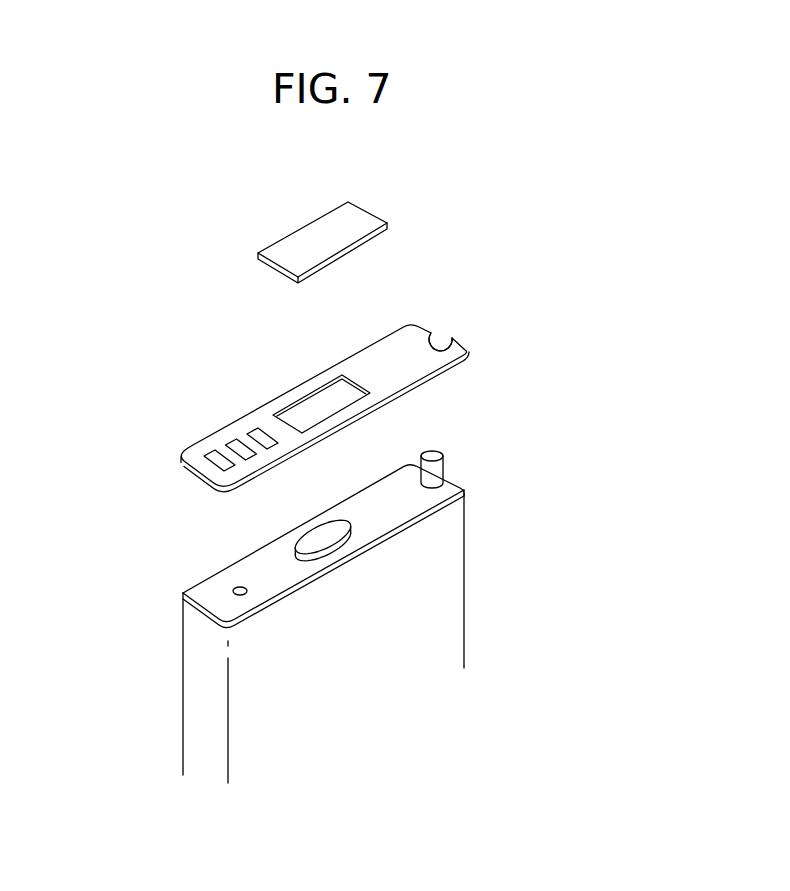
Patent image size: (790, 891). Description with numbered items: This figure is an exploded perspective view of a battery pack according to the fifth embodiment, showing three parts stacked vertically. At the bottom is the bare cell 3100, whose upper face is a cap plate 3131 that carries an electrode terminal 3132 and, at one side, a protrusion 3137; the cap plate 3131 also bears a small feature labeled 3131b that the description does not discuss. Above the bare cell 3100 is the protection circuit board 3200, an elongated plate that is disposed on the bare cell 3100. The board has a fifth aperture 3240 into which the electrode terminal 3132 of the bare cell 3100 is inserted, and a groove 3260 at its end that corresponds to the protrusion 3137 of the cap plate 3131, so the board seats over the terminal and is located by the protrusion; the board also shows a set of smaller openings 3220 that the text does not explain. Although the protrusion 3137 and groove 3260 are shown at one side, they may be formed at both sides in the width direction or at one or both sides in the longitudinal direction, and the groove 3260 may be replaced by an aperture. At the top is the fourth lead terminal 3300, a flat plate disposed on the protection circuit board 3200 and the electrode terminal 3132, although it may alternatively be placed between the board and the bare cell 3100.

The bare cell 3100 is at (470, 568).
The cap plate 3131 is at (383, 527).
The hole in cap plate 3131b is at (237, 587).
The electrode terminal 3132 is at (320, 542).
The protrusion 3137 is at (437, 448).
The protection circuit board 3200 is at (178, 447).
The slots (coupling holes) 3220 is at (257, 436).
The fifth aperture 3240 is at (295, 412).
The groove 3260 is at (443, 333).
The fourth lead terminal 3300 is at (318, 228).